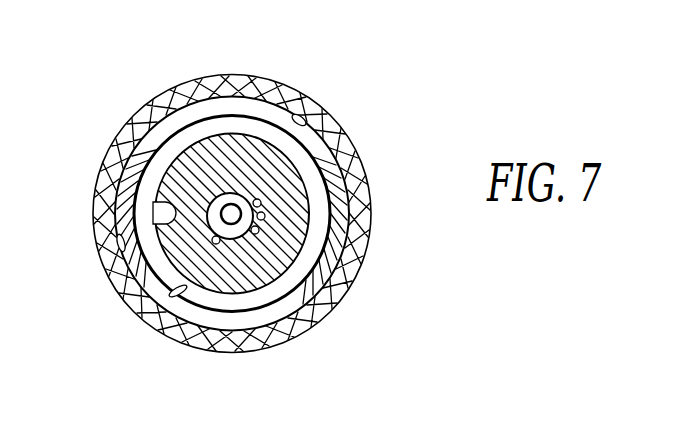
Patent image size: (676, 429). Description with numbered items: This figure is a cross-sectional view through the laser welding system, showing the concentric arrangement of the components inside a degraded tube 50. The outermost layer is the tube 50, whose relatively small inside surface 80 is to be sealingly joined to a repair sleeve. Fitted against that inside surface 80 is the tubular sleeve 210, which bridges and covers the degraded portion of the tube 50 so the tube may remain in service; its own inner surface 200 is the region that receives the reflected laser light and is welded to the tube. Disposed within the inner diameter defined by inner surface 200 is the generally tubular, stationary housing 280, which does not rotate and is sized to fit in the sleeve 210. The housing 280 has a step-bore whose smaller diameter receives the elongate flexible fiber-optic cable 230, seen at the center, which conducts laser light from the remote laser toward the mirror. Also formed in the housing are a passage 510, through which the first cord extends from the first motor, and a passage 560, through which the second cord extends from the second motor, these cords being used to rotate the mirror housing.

The tube 50 is at (330, 305).
The inside surface 80 is at (304, 116).
The inner surface 200 is at (162, 303).
The tubular sleeve 210 is at (268, 318).
The fiber-optic cable 230 is at (232, 217).
The stationary housing 280 is at (245, 140).
The passage 510 is at (252, 203).
The passage 560 is at (258, 232).